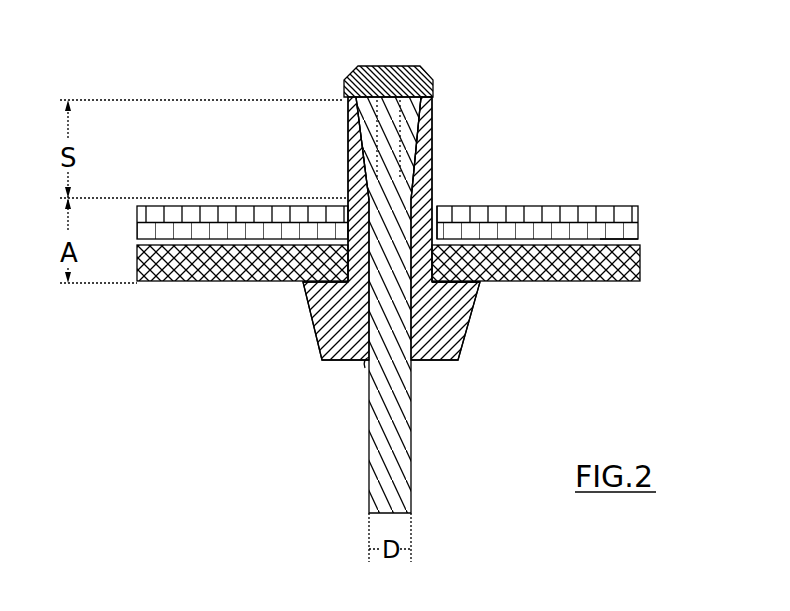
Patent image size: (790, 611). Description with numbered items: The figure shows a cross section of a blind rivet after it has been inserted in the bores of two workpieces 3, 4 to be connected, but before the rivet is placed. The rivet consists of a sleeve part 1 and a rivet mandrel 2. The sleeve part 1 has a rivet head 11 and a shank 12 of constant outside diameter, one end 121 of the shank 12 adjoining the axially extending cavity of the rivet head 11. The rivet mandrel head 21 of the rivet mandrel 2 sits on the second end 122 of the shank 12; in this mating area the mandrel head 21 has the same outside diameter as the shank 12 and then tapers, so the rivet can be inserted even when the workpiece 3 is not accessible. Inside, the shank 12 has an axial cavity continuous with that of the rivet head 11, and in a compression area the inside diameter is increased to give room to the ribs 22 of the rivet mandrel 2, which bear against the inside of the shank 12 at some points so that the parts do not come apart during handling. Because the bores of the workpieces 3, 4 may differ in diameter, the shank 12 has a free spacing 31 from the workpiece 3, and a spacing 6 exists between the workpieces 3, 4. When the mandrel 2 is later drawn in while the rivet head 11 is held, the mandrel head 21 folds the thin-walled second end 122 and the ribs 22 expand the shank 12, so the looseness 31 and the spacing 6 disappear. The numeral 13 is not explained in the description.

The sleeve part 1 is at (383, 253).
The rivet mandrel 2 is at (385, 273).
The workpiece 3 is at (632, 205).
The workpiece 4 is at (630, 276).
The spacing between the workpieces 6 is at (638, 238).
The rivet head 11 is at (450, 355).
The shank 12 is at (347, 180).
The inner lip of flange 13 is at (372, 368).
The rivet mandrel head 21 is at (357, 76).
The ribs 22 is at (433, 152).
The free spacing 31 is at (432, 200).
The end of the shank 121 is at (472, 284).
The second end of the shank 122 is at (433, 108).